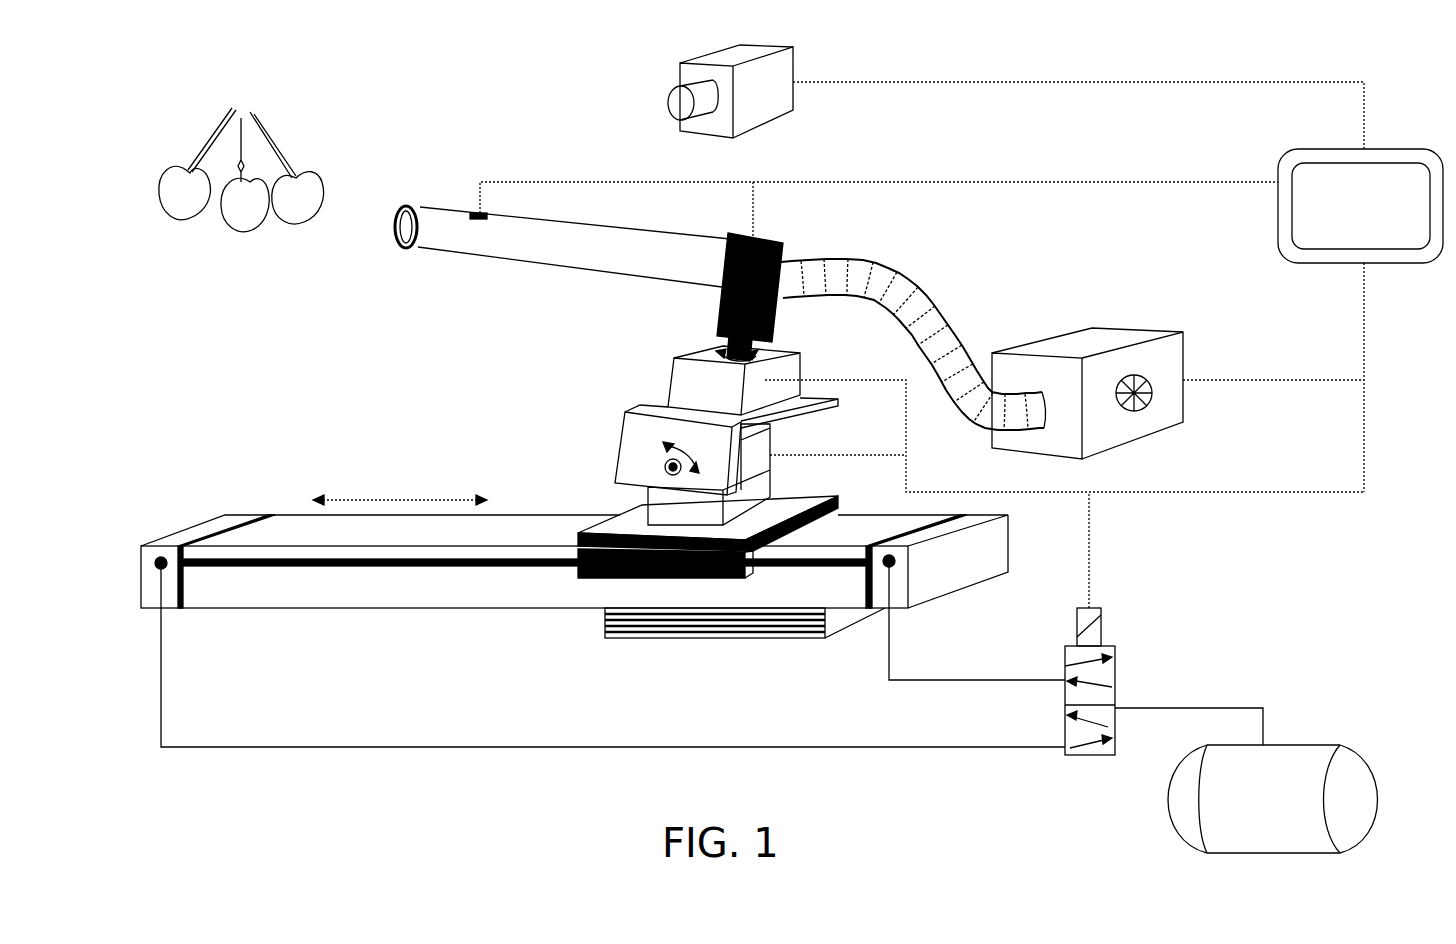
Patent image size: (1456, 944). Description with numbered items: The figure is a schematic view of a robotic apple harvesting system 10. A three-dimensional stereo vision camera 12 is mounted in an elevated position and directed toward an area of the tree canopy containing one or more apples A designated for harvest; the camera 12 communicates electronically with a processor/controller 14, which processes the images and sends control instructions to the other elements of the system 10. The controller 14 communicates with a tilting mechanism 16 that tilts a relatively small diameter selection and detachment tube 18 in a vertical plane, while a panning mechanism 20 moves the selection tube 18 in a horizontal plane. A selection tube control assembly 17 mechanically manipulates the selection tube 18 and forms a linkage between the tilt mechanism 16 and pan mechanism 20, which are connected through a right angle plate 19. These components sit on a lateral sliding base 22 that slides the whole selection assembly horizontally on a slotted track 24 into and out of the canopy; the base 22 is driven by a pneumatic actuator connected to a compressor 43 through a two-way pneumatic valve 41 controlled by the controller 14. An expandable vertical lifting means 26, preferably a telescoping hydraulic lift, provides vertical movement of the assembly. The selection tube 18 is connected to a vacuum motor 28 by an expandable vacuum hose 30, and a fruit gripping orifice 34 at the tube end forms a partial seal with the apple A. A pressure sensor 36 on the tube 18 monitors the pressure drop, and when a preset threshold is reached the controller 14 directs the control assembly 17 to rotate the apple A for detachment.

The apple A is at (147, 154).
The apple harvesting system 10 is at (130, 318).
The three-dimensional stereo vision camera 12 is at (773, 97).
The processor/controller 14 is at (1372, 217).
The tilting mechanism 16 is at (761, 490).
The selection tube control assembly 17 is at (773, 237).
The selection and detachment tube 18 is at (620, 277).
The right angle plate 19 is at (637, 432).
The panning mechanism 20 is at (717, 397).
The lateral sliding base 22 is at (613, 530).
The slotted track 24 is at (237, 557).
The vertical lifting means 26 is at (605, 638).
The vacuum motor 28 is at (1172, 368).
The expandable vacuum hose 30 is at (897, 283).
The fruit gripping orifice 34 is at (402, 247).
The pressure sensor 36 is at (477, 209).
The two-way pneumatic valve 41 is at (1117, 672).
The compressor 43 is at (1285, 810).